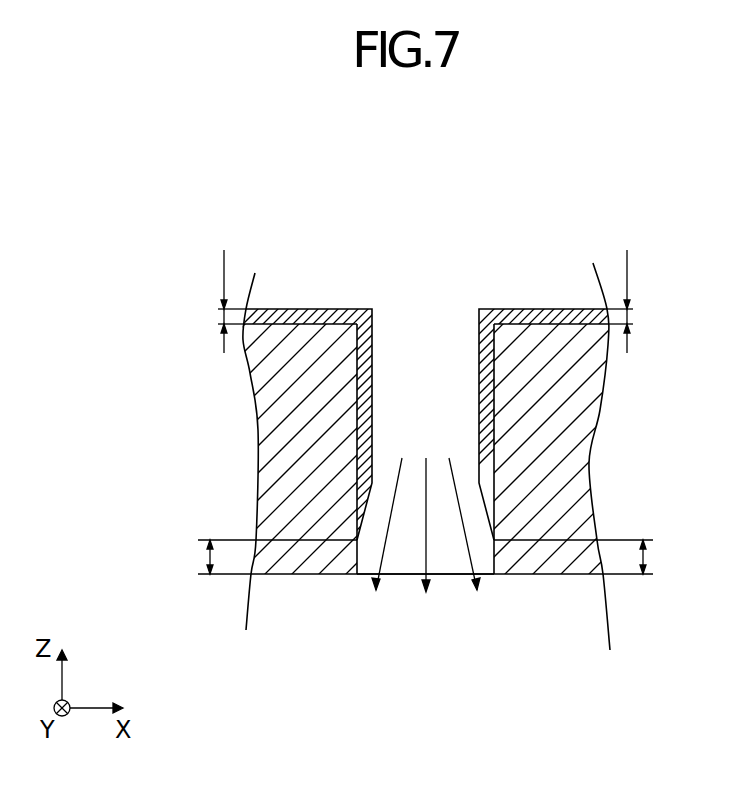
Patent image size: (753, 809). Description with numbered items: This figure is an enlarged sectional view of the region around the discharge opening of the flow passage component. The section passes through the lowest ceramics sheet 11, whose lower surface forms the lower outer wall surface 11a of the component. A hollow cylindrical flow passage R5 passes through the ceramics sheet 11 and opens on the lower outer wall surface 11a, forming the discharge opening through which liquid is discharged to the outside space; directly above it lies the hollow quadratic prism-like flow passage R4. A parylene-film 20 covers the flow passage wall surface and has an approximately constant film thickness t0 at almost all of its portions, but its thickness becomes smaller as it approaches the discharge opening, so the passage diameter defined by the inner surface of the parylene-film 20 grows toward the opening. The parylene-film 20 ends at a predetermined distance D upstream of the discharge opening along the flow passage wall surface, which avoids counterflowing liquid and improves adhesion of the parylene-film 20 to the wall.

The ceramics sheet 11 is at (270, 432).
The lower outer wall surface 11a is at (528, 575).
The parylene-film 20 is at (478, 343).
The flow passage R4 is at (440, 285).
The flow passage R5 is at (440, 428).
The film thickness t0 is at (425, 301).
The predetermined distance D is at (428, 557).